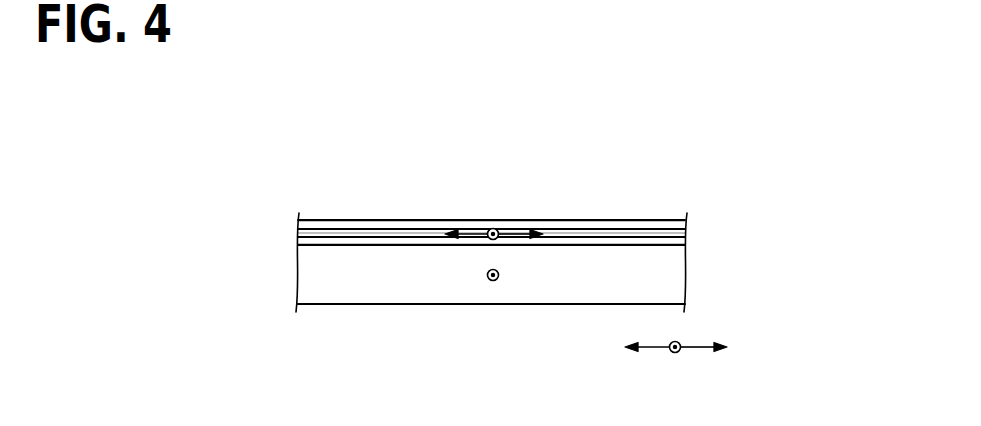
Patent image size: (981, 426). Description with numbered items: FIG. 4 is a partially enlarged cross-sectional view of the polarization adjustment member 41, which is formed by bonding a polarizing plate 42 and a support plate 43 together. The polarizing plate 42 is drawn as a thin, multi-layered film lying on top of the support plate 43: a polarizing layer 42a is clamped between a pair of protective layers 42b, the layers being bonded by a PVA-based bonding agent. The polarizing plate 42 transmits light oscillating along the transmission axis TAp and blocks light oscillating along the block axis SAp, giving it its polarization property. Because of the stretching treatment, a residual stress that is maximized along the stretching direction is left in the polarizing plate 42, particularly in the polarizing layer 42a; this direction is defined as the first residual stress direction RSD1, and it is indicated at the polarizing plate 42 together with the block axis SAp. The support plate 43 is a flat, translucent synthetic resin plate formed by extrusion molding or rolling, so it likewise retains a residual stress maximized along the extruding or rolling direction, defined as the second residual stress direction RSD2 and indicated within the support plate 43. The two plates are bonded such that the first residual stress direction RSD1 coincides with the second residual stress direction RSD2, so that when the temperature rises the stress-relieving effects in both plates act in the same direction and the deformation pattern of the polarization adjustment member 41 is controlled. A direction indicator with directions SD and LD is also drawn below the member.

The polarization adjustment member 41 is at (469, 209).
The polarizing plate 42 is at (236, 190).
The polarizing layer 42a is at (298, 232).
The protective layers 42b is at (298, 221).
The support plate 43 is at (672, 276).
The first residual stress direction RSD1 is at (493, 228).
The block axis SAp is at (493, 234).
The transmission axis TAp is at (513, 231).
The second residual stress direction RSD2 is at (493, 281).
The short direction SD is at (676, 355).
The long direction LD is at (697, 352).